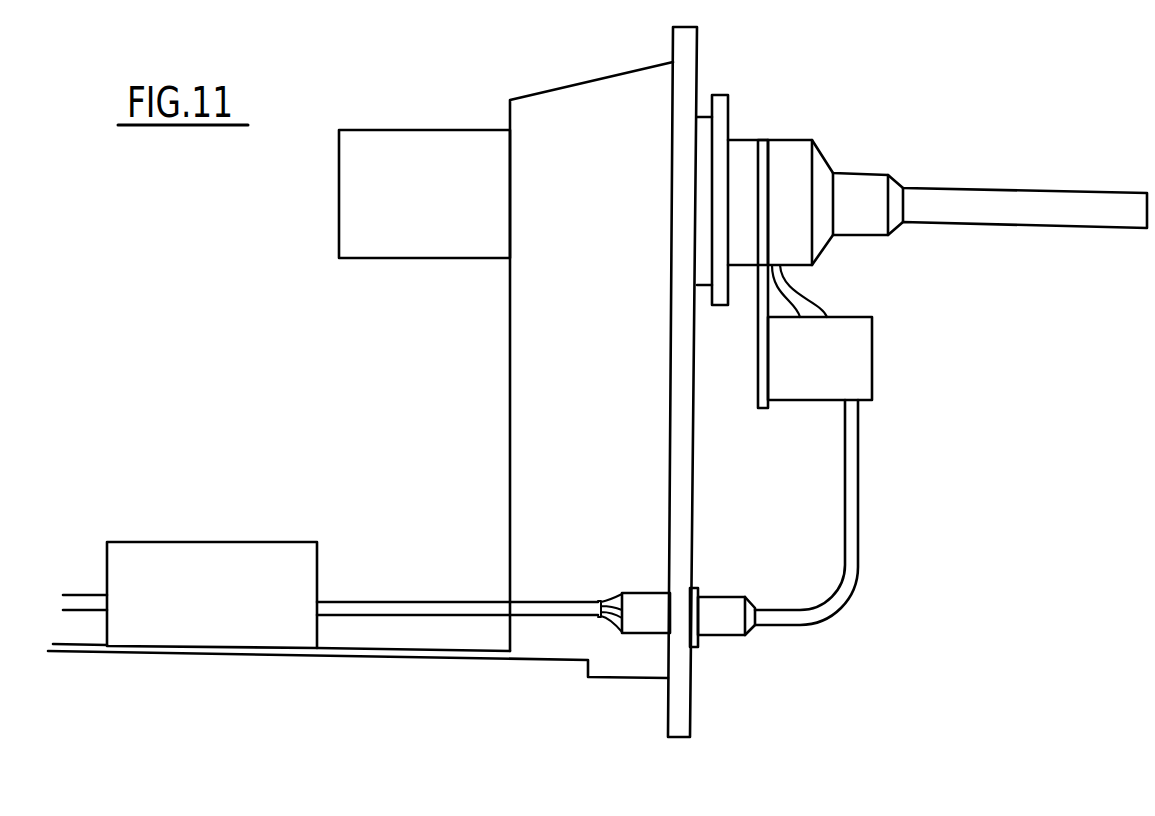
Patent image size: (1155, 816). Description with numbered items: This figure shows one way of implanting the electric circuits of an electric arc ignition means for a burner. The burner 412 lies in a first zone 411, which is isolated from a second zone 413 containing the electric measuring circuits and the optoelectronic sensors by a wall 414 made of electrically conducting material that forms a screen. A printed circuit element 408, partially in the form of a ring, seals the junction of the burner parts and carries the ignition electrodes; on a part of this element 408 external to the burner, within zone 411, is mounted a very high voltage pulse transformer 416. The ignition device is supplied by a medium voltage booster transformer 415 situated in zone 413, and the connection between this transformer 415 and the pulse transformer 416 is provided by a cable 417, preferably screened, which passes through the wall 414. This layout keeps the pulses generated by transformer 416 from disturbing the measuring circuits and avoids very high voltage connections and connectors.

The printed circuit element 408 is at (758, 350).
The zone 411 is at (804, 543).
The burner 412 is at (795, 165).
The zone 413 is at (427, 427).
The wall 414 is at (681, 505).
The medium voltage booster transformer 415 is at (240, 570).
The very high voltage pulse transformer 416 is at (858, 348).
The cable 417 is at (850, 592).